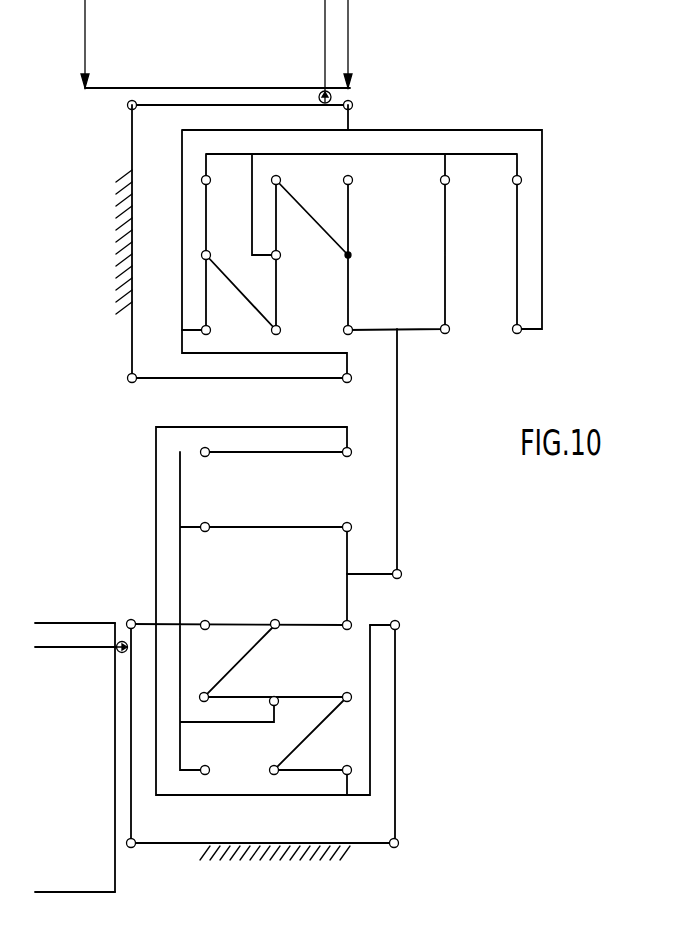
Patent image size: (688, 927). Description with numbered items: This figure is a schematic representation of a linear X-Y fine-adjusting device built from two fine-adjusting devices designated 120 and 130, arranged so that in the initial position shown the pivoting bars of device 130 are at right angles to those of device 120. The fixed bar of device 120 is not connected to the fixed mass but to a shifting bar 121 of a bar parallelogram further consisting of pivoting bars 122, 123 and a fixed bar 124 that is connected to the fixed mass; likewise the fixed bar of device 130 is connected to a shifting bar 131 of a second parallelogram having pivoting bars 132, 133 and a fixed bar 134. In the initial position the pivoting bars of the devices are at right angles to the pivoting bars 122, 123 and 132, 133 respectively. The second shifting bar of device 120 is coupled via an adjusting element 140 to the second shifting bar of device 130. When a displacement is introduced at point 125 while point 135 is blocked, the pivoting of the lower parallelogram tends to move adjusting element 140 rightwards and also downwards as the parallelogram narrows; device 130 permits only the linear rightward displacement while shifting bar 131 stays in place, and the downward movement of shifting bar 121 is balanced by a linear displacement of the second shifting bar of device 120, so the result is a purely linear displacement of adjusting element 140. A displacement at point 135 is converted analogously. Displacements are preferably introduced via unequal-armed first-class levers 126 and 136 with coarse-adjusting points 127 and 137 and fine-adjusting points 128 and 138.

The device 120 is at (241, 611).
The shifting bar 121 is at (250, 797).
The pivoting bar 122 is at (397, 713).
The pivoting bar 123 is at (134, 818).
The fixed bar 124 is at (173, 845).
The point 125 is at (81, 661).
The unequal-armed first-class lever 126 is at (113, 768).
The coarse-adjusting point 127 is at (75, 611).
The fine-adjusting point 128 is at (75, 881).
The device 130 is at (352, 244).
The shifting bar 131 is at (181, 267).
The pivoting bar 132 is at (239, 380).
The pivoting bar 133 is at (229, 103).
The fixed bar 134 is at (132, 142).
The point 135 is at (315, 51).
The unequal-armed first-class lever 136 is at (177, 88).
The coarse-adjusting point 137 is at (364, 44).
The fine-adjusting point 138 is at (98, 44).
The adjusting element 140 is at (402, 571).